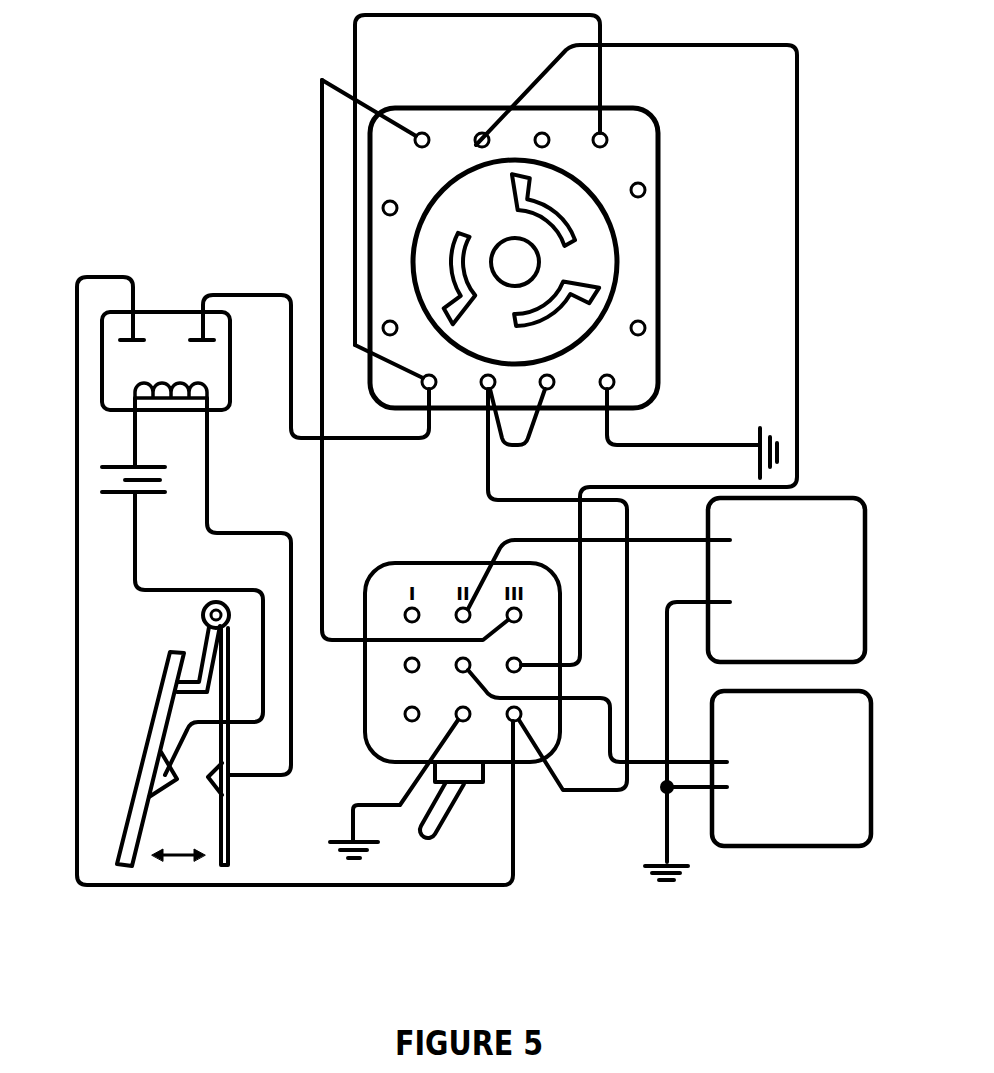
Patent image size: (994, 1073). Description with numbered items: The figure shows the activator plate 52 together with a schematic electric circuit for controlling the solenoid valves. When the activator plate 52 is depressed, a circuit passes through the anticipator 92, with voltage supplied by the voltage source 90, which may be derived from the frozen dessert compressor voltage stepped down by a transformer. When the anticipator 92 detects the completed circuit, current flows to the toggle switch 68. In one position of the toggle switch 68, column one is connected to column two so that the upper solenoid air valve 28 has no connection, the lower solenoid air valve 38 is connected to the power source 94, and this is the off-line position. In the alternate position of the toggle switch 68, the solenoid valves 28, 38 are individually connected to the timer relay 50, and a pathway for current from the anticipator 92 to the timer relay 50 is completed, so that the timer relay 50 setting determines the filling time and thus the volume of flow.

The timer relay 50 is at (652, 253).
The anticipator 92 is at (175, 323).
The voltage source 90 is at (123, 492).
The activator plate 52 is at (157, 705).
The toggle switch 68 is at (463, 797).
The power source 94 is at (356, 866).
The solenoid air valve 28 is at (819, 514).
The second solenoid air valve 38 is at (808, 833).